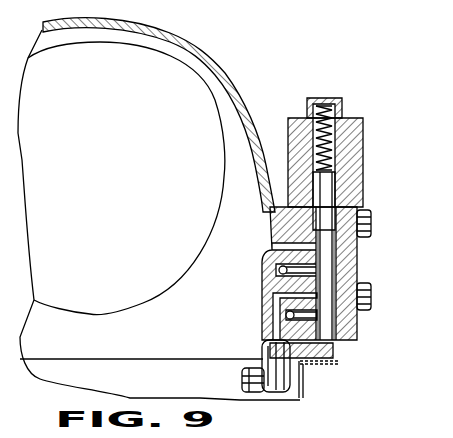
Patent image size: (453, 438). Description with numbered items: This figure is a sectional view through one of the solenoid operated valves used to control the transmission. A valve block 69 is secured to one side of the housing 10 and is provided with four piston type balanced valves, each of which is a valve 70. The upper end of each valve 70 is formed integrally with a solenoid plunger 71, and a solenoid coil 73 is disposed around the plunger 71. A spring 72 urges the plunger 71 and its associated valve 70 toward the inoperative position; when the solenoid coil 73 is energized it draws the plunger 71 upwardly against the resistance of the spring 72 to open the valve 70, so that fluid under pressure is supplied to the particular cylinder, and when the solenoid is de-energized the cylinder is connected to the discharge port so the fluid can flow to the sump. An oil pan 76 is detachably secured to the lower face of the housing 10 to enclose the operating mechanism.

The housing 10 is at (218, 73).
The spring 72 is at (328, 148).
The solenoid coil 73 is at (348, 166).
The solenoid plunger 71 is at (325, 200).
The valve 70 is at (323, 260).
The valve block 69 is at (343, 263).
The oil pan 76 is at (230, 366).